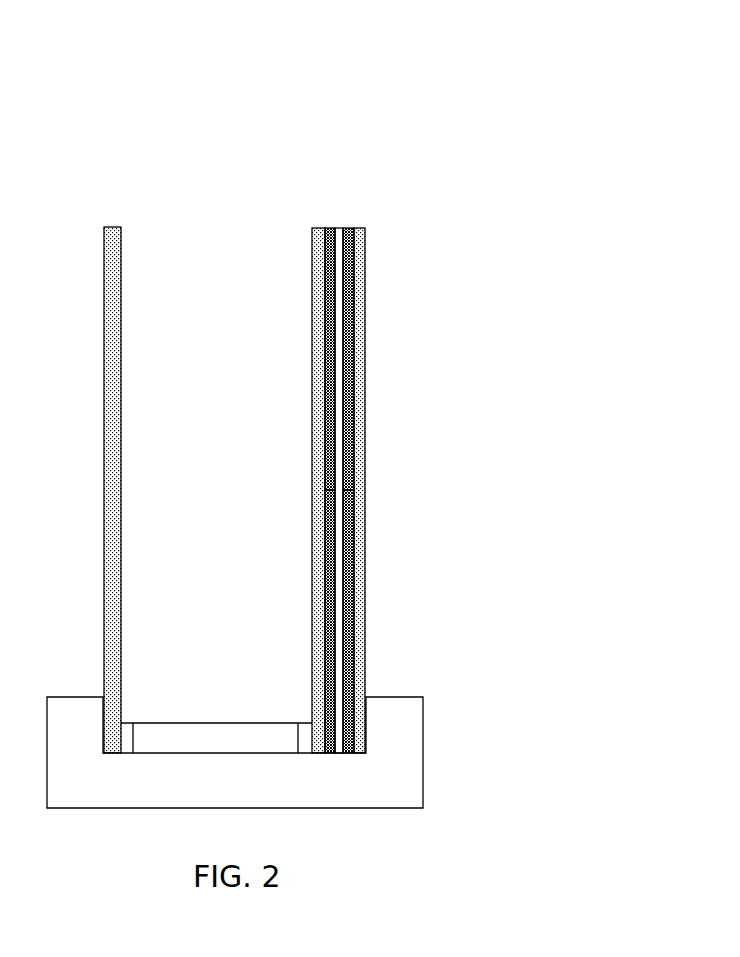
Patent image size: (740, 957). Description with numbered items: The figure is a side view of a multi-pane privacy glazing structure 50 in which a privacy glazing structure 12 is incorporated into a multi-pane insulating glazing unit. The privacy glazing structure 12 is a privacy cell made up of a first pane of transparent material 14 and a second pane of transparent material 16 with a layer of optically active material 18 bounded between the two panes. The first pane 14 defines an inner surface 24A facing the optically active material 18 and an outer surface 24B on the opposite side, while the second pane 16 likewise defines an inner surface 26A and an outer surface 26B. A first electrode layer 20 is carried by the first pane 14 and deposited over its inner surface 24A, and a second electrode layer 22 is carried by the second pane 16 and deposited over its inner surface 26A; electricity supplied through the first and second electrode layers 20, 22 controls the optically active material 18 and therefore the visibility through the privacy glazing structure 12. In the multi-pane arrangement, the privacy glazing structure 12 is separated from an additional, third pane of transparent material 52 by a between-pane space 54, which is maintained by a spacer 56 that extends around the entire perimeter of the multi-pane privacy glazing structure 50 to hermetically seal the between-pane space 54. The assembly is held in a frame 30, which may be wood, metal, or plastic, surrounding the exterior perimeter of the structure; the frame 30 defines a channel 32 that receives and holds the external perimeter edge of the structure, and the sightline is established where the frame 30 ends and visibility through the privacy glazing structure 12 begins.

The multi-pane privacy glazing structure 50 is at (168, 54).
The privacy glazing structure 12 is at (353, 439).
The first pane of transparent material 14 is at (317, 262).
The second pane of transparent material 16 is at (360, 262).
The layer of optically active material 18 is at (339, 240).
The first electrode layer 20 is at (330, 238).
The second electrode layer 22 is at (347, 238).
The inner surface 24A is at (328, 360).
The outer surface 24B is at (312, 434).
The inner surface 26A is at (353, 360).
The outer surface 26B is at (366, 434).
The frame 30 is at (63, 702).
The channel 32 is at (382, 686).
The additional pane of transparent material 52 is at (109, 229).
The between-pane space 54 is at (312, 562).
The spacer 56 is at (206, 704).